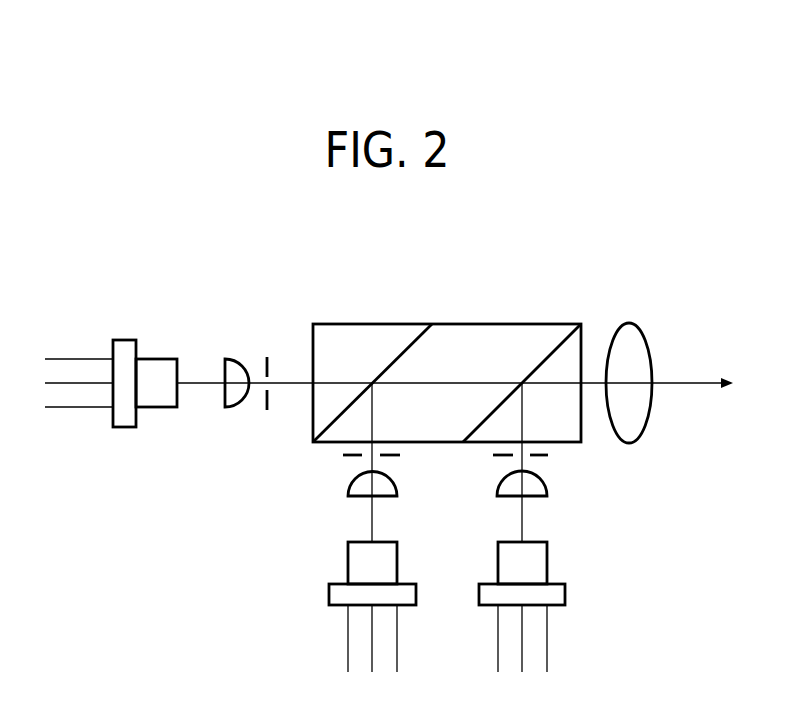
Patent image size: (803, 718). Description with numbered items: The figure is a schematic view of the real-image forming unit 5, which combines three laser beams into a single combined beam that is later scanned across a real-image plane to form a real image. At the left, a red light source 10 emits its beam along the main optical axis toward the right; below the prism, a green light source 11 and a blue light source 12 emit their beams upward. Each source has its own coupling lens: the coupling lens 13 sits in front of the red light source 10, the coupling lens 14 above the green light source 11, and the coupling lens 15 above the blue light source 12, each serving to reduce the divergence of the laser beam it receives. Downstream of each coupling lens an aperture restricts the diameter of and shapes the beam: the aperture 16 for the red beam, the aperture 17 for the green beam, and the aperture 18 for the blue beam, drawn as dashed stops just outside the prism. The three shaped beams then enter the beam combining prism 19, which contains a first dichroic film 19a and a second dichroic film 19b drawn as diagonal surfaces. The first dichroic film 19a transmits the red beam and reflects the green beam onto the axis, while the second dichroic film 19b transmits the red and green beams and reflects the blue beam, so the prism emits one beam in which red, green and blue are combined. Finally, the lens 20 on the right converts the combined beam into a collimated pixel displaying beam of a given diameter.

The real-image forming unit 5 is at (213, 277).
The red light source 10 is at (127, 340).
The green light source 11 is at (329, 604).
The blue light source 12 is at (565, 604).
The coupling lens 13 is at (242, 359).
The coupling lens 14 is at (348, 497).
The coupling lens 15 is at (554, 497).
The aperture 16 is at (266, 412).
The aperture 17 is at (345, 456).
The aperture 18 is at (554, 456).
The beam combining prism 19 is at (478, 320).
The first dichroic film 19a is at (412, 338).
The second dichroic film 19b is at (562, 338).
The lens 20 is at (644, 334).